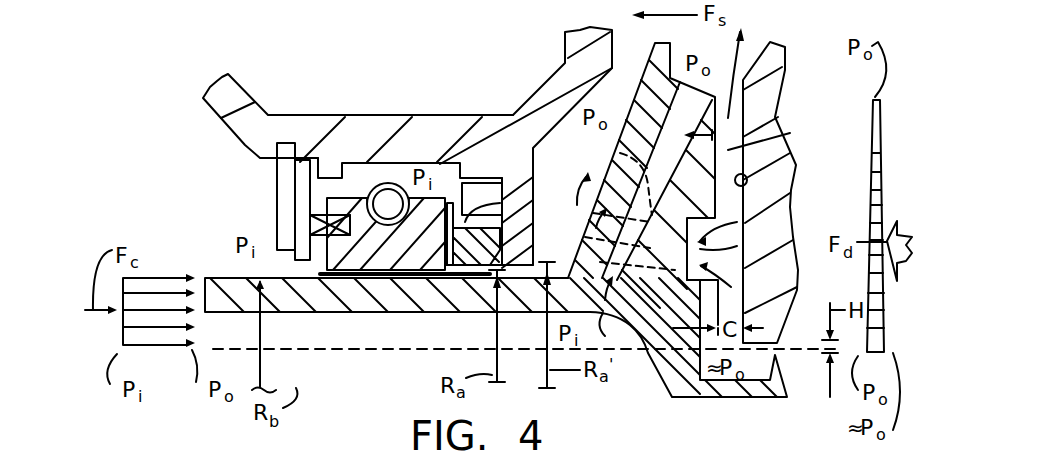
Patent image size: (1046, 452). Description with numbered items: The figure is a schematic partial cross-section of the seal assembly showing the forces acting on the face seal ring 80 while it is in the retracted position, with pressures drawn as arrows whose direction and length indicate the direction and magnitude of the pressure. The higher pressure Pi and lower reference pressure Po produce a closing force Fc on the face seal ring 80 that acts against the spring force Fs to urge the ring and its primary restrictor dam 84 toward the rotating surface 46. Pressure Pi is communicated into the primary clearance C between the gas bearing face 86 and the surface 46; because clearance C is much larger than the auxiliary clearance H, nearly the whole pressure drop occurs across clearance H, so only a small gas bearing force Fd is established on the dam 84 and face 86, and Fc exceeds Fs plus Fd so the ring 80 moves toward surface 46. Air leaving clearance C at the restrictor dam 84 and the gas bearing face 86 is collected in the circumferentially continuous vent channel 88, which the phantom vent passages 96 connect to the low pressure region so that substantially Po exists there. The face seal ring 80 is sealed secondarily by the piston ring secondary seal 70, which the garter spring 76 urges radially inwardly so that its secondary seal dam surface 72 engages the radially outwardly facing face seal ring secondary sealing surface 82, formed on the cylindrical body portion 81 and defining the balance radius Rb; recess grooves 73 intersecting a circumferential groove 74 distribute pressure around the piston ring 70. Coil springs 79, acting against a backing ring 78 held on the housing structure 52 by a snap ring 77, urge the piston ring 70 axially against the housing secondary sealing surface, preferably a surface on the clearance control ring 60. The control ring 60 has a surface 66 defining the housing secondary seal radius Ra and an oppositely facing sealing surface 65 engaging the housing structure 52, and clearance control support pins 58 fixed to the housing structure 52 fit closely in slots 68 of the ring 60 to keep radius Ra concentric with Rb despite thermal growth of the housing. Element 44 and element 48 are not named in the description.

The housing member 44 is at (778, 78).
The surface 46 is at (743, 187).
The stator flange 48 is at (797, 287).
The housing structure 52 is at (238, 92).
The clearance control support pins 58 is at (472, 178).
The clearance control ring 60 is at (447, 278).
The sealing surface 65 is at (505, 230).
The surface 66 is at (457, 278).
The slots 68 is at (505, 200).
The piston ring secondary seal 70 is at (372, 165).
The secondary seal dam surface 72 is at (442, 270).
The recess grooves 73 is at (323, 274).
The circumferentially extending groove 74 is at (397, 298).
The garter spring 76 is at (377, 185).
The snap ring 77 is at (278, 167).
The backing ring 78 is at (300, 188).
The coil springs 79 is at (310, 221).
The face seal ring 80 is at (642, 365).
The cylindrical body portion 81 is at (247, 298).
The face seal ring secondary sealing surface 82 is at (224, 277).
The primary restrictor dam 84 is at (745, 292).
The gas bearing face 86 is at (790, 133).
The vent channel 88 is at (740, 241).
The vent passages 96 is at (620, 153).